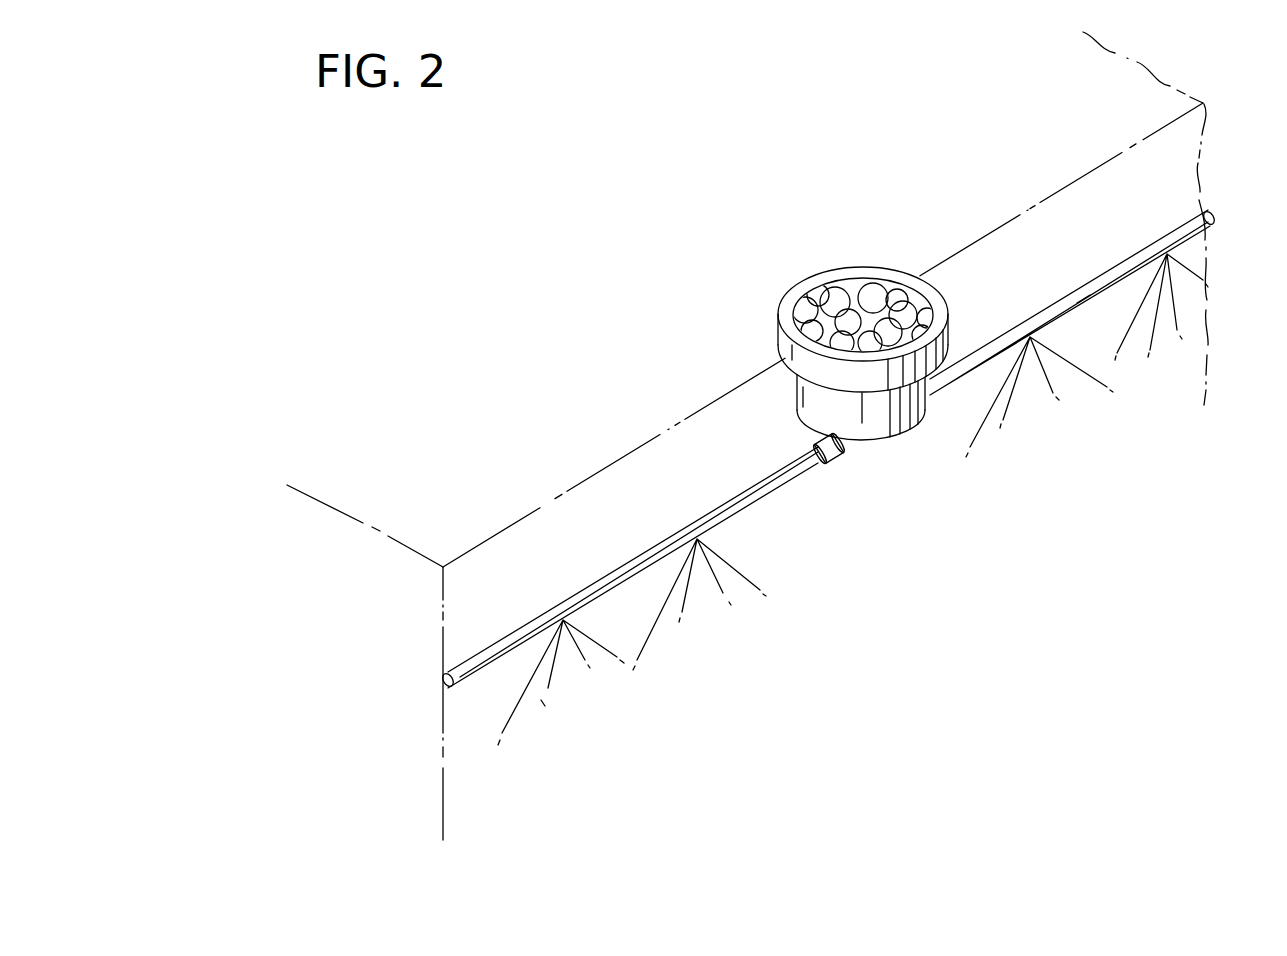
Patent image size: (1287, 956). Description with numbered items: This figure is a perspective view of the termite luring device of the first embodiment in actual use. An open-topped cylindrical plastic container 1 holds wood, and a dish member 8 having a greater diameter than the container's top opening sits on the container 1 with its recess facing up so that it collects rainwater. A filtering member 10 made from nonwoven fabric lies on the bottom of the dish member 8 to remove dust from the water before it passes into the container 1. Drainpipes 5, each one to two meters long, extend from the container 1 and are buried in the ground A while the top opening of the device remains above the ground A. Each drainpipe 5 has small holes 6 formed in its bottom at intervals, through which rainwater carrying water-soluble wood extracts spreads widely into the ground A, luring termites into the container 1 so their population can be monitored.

The container 1 is at (892, 425).
The drainpipes 5 is at (783, 478).
The holes 6 is at (1030, 340).
The dish member 8 is at (874, 268).
The filtering member 10 is at (807, 294).
The ground A is at (1185, 163).